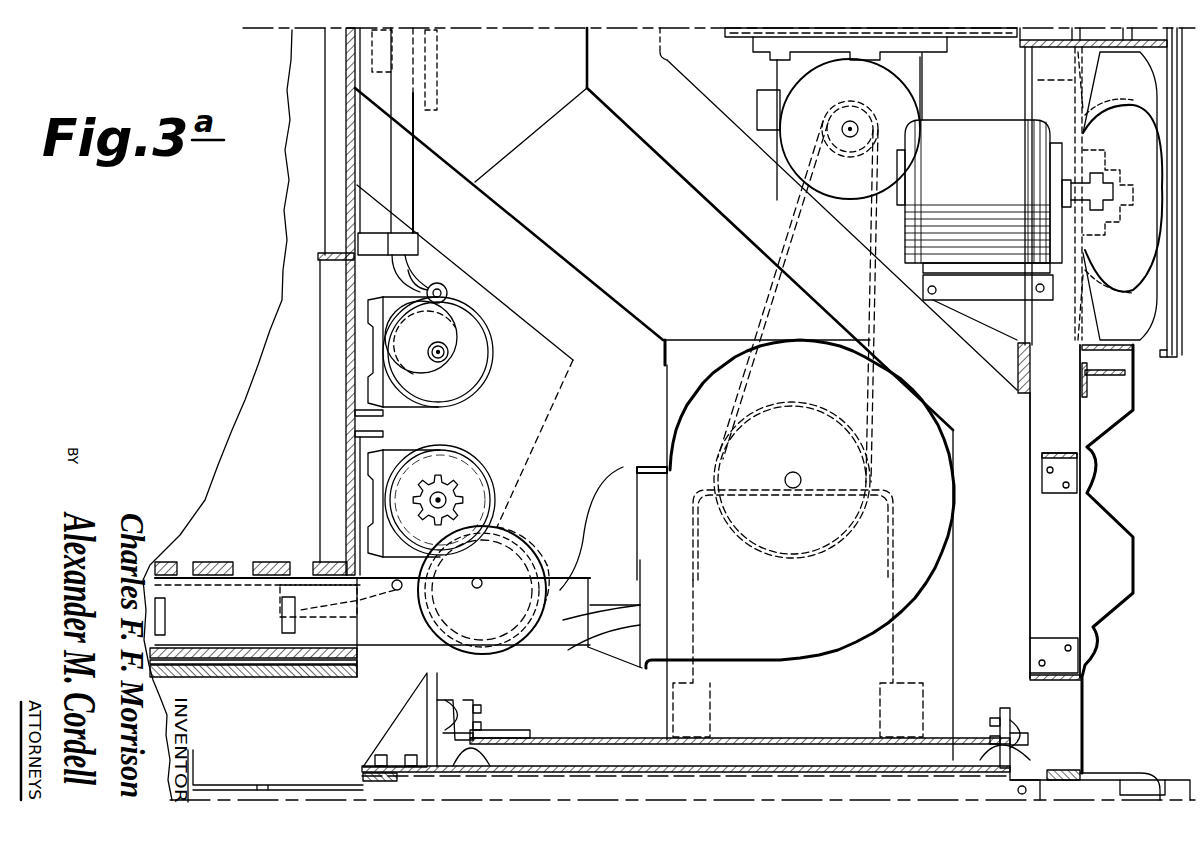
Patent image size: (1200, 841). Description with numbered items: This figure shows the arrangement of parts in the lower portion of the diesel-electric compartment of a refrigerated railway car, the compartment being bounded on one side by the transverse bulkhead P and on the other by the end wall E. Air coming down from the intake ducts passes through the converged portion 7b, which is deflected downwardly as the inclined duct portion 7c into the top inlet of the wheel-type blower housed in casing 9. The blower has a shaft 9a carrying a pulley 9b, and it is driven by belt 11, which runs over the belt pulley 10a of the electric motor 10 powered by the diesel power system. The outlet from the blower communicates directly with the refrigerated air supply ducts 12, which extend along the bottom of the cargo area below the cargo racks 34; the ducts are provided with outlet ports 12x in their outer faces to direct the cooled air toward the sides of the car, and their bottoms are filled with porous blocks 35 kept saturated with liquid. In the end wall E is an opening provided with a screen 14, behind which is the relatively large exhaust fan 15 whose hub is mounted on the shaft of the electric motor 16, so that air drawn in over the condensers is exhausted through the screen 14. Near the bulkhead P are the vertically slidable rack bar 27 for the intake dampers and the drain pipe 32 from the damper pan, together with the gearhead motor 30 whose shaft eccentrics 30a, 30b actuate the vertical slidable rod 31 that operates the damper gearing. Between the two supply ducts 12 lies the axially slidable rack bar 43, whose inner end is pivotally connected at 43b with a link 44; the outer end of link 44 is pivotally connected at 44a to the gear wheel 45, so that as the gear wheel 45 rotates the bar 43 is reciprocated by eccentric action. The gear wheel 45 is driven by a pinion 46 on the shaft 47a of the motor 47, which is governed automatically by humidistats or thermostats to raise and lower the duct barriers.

The transverse bulkhead P is at (338, 216).
The rack bar 27 is at (394, 44).
The drain pipe 32 is at (438, 78).
The vertical slidable rod 31 is at (424, 202).
The converged portion 7b is at (598, 72).
The inclined duct portion 7c is at (697, 208).
The gearhead motor 30 is at (488, 361).
The eccentric 30a is at (452, 318).
The eccentric 30b is at (471, 381).
The motor 47 is at (410, 458).
The shaft 47a is at (443, 489).
The pinion 46 is at (473, 490).
The link 44 is at (482, 590).
The pivotal connection 44a is at (525, 544).
The gear wheel 45 is at (535, 462).
The refrigerated air supply duct 12 is at (630, 476).
The outlet port 12x is at (175, 620).
The porous block 35 is at (185, 655).
The cargo rack 34 is at (207, 562).
The rack bar 43 is at (265, 600).
The pivotal connection 43b is at (408, 620).
The blower casing 9 is at (938, 504).
The blower shaft 9a is at (800, 474).
The pulley 9b is at (784, 418).
The belt 11 is at (800, 251).
The electric motor 10 is at (900, 98).
The belt pulley 10a is at (873, 174).
The electric motor 16 is at (995, 118).
The exhaust fan 15 is at (1130, 96).
The screen 14 is at (1180, 332).
The end wall E is at (1112, 502).